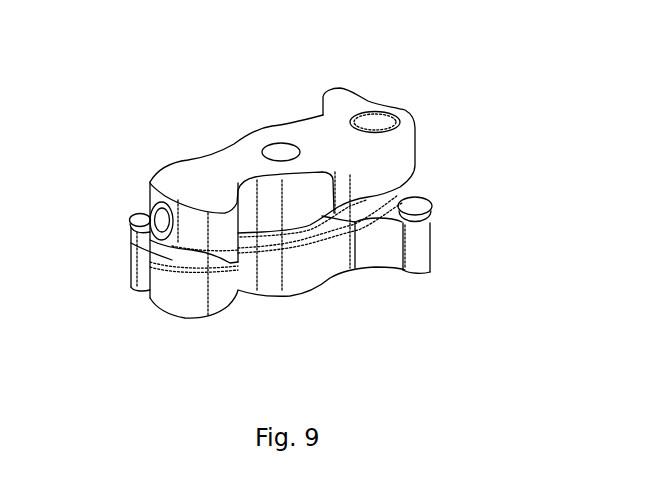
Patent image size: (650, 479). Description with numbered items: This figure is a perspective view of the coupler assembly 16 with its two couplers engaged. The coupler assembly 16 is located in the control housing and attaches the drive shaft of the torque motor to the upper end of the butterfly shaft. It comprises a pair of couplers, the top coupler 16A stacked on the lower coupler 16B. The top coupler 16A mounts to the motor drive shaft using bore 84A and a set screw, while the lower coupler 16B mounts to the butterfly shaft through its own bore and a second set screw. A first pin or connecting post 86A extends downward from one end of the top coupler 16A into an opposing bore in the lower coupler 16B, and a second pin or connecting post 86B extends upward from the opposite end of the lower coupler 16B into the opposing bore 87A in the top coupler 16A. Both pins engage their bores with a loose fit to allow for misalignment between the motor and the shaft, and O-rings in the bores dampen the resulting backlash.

The coupler assembly 16 is at (193, 91).
The top coupler 16A is at (195, 173).
The lower coupler 16B is at (235, 292).
The bore 84A is at (281, 150).
The bore 87A is at (390, 105).
The first pin or connecting post 86A is at (178, 255).
The second pin or connecting post 86B is at (377, 122).